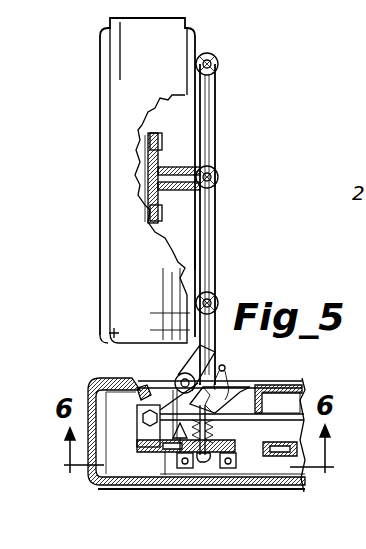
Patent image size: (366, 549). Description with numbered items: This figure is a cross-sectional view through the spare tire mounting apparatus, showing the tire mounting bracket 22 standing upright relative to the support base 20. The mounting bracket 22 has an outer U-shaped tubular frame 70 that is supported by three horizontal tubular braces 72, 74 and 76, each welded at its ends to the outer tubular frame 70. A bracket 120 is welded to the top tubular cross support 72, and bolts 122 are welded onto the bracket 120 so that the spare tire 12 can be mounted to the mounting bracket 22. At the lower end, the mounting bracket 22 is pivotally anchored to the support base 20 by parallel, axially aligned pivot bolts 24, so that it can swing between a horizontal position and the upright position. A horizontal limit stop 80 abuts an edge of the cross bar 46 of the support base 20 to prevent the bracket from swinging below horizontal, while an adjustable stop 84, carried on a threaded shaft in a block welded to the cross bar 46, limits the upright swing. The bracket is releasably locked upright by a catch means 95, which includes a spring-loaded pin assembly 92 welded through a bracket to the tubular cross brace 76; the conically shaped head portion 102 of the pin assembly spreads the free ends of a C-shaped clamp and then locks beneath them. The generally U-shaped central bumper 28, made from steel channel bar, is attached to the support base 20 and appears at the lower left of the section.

The spare tire 12 is at (127, 273).
The support base 20 is at (242, 457).
The tire mounting bracket 22 is at (207, 257).
The pivot bolt 24 is at (112, 480).
The central bumper 28 is at (93, 380).
The cross bar 46 is at (140, 435).
The outer tubular frame 70 is at (205, 115).
The tubular brace 72 is at (210, 166).
The tubular brace 74 is at (207, 283).
The tubular cross brace 76 is at (210, 366).
The horizontal limit stop 80 is at (153, 390).
The adjustable stop 84 is at (176, 468).
The spring-loaded pin assembly 92 is at (222, 418).
The catch means 95 is at (203, 468).
The conically shaped head portion 102 is at (206, 470).
The bracket 120 is at (160, 188).
The bolt 122 is at (162, 143).